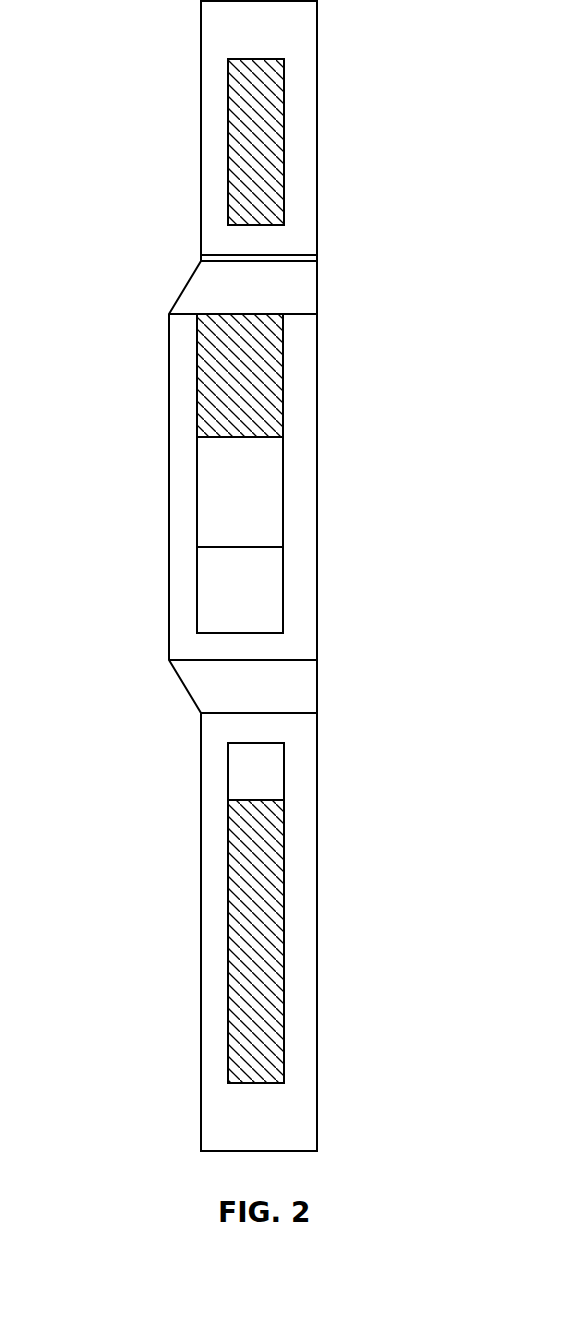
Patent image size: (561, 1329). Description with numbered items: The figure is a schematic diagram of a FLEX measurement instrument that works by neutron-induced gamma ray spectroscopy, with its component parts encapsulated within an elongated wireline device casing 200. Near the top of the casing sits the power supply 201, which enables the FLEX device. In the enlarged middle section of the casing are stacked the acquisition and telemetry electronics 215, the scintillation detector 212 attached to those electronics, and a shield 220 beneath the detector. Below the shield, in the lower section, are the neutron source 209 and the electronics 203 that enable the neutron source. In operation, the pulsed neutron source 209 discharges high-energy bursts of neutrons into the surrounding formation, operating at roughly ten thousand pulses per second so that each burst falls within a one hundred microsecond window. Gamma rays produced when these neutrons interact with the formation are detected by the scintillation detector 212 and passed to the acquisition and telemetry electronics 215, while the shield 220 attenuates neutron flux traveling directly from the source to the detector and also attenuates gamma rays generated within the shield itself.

The wireline device casing 200 is at (317, 117).
The power supply 201 is at (228, 87).
The acquisition and telemetry electronics 215 is at (197, 350).
The scintillation detector 212 is at (197, 475).
The shield 220 is at (197, 580).
The neutron source 209 is at (228, 772).
The electronics 203 is at (228, 862).